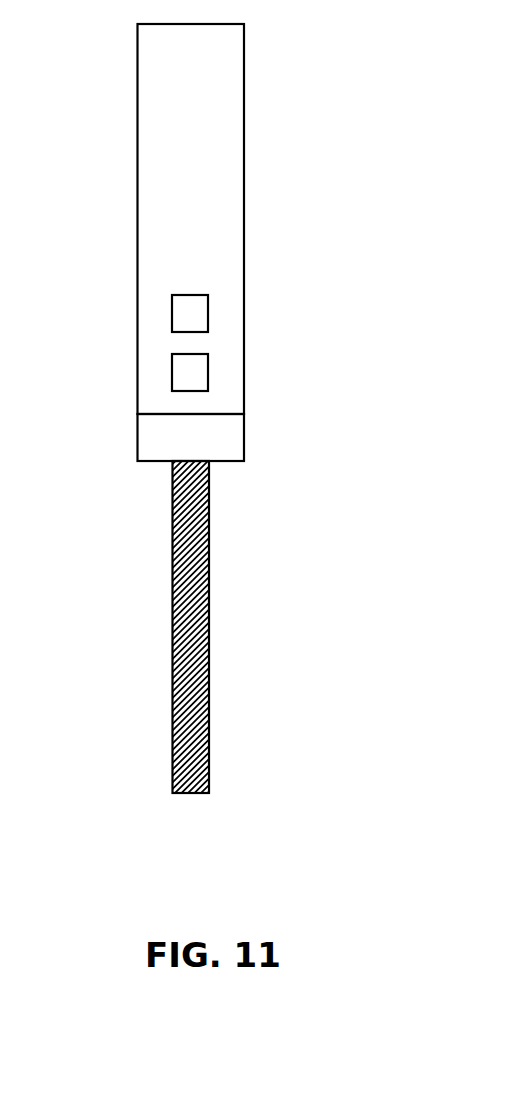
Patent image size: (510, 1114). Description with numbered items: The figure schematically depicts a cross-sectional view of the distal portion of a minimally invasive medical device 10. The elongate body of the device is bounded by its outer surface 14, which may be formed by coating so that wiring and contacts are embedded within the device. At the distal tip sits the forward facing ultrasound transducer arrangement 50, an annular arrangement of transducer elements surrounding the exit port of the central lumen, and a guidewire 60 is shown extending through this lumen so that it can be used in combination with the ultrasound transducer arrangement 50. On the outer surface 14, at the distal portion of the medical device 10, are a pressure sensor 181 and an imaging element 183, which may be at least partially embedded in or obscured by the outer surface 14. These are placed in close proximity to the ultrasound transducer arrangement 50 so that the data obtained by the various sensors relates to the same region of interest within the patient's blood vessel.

The medical device 10 is at (205, 877).
The outer surface 14 is at (244, 327).
The ultrasound transducer arrangement 50 is at (227, 445).
The guidewire 60 is at (202, 617).
The pressure sensor 181 is at (180, 310).
The imaging element 183 is at (178, 380).